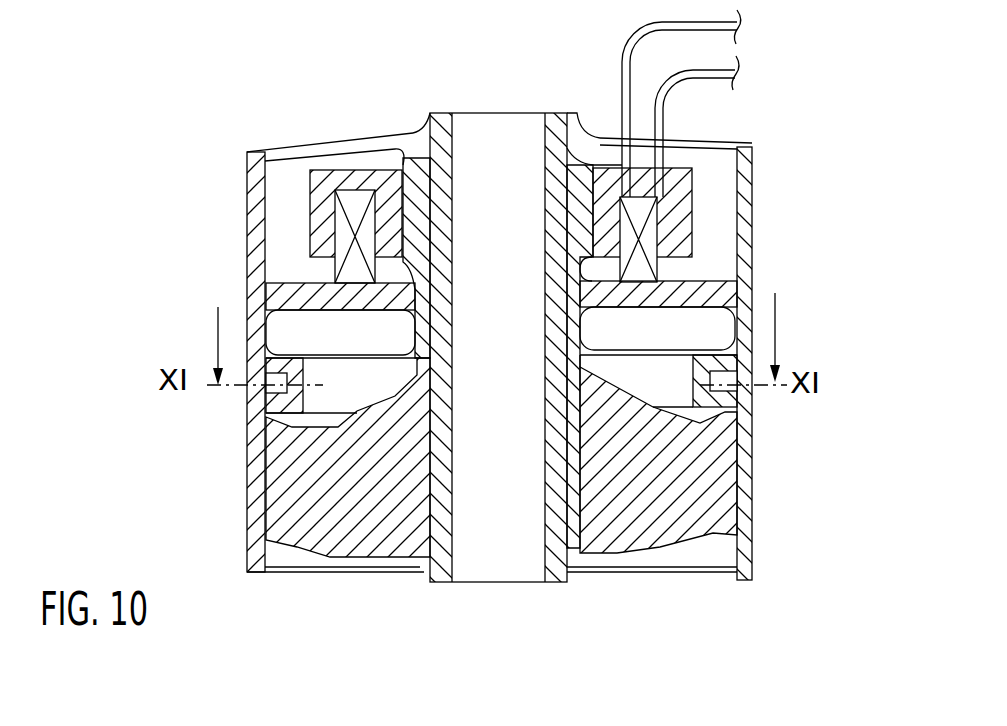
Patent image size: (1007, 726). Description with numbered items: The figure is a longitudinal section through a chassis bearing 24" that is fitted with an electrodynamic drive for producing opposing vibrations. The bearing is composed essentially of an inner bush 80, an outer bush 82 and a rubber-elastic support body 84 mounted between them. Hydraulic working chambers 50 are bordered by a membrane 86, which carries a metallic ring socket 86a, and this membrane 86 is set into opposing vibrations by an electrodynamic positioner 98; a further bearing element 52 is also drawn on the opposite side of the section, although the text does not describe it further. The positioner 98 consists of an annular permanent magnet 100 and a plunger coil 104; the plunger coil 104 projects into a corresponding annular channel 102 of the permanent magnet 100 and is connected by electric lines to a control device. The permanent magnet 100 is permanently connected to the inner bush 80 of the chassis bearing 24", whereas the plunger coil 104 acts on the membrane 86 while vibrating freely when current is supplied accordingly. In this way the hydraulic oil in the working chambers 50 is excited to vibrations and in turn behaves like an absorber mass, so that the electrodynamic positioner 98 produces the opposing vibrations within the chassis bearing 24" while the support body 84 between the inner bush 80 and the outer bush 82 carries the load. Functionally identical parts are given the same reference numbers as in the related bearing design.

The chassis bearing 24 is at (687, 607).
The working chambers 50 is at (673, 318).
The bearing (left) 52 is at (287, 362).
The inner bush 80 is at (565, 478).
The outer bush 82 is at (745, 515).
The rubber-elastic support body 84 is at (340, 485).
The membrane 86 is at (297, 258).
The metallic ring socket 86a is at (320, 283).
The electrodynamic positioner 98 is at (703, 163).
The annular permanent magnet 100 is at (680, 181).
The annular channel 102 is at (353, 188).
The plunger coil 104 is at (648, 250).